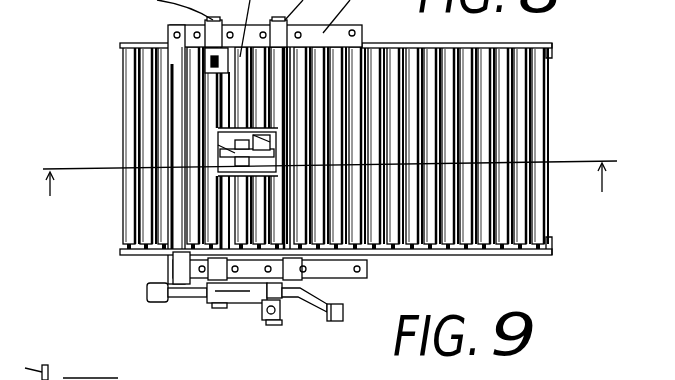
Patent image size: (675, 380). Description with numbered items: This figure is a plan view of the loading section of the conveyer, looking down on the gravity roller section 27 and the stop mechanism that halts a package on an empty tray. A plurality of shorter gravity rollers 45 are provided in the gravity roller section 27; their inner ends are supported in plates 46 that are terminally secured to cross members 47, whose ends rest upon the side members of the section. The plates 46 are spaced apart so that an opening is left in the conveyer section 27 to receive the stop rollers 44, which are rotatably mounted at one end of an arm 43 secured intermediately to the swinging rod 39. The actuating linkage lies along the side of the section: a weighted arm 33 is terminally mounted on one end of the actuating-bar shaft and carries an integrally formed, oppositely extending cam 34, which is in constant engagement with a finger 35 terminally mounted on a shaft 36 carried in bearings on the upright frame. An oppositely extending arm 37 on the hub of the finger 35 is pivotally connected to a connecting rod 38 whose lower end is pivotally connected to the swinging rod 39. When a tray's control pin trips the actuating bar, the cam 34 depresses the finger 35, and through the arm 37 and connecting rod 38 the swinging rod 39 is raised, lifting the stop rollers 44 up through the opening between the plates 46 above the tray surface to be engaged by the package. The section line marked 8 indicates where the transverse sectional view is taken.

The gravity roller section 27 is at (128, 47).
The arm 43 is at (275, 135).
The rollers 44 is at (233, 145).
The plates 46 is at (228, 132).
The cross members 47 is at (215, 194).
The shorter gravity rollers 45 is at (173, 262).
The weighted arm 33 is at (153, 293).
The cam 34 is at (253, 293).
The finger 35 is at (262, 318).
The shaft 36 is at (162, 379).
The arm 37 is at (310, 305).
The connecting rod 38 is at (300, 313).
The swinging rod 39 is at (275, 322).
The section line 8- 8 is at (331, 167).